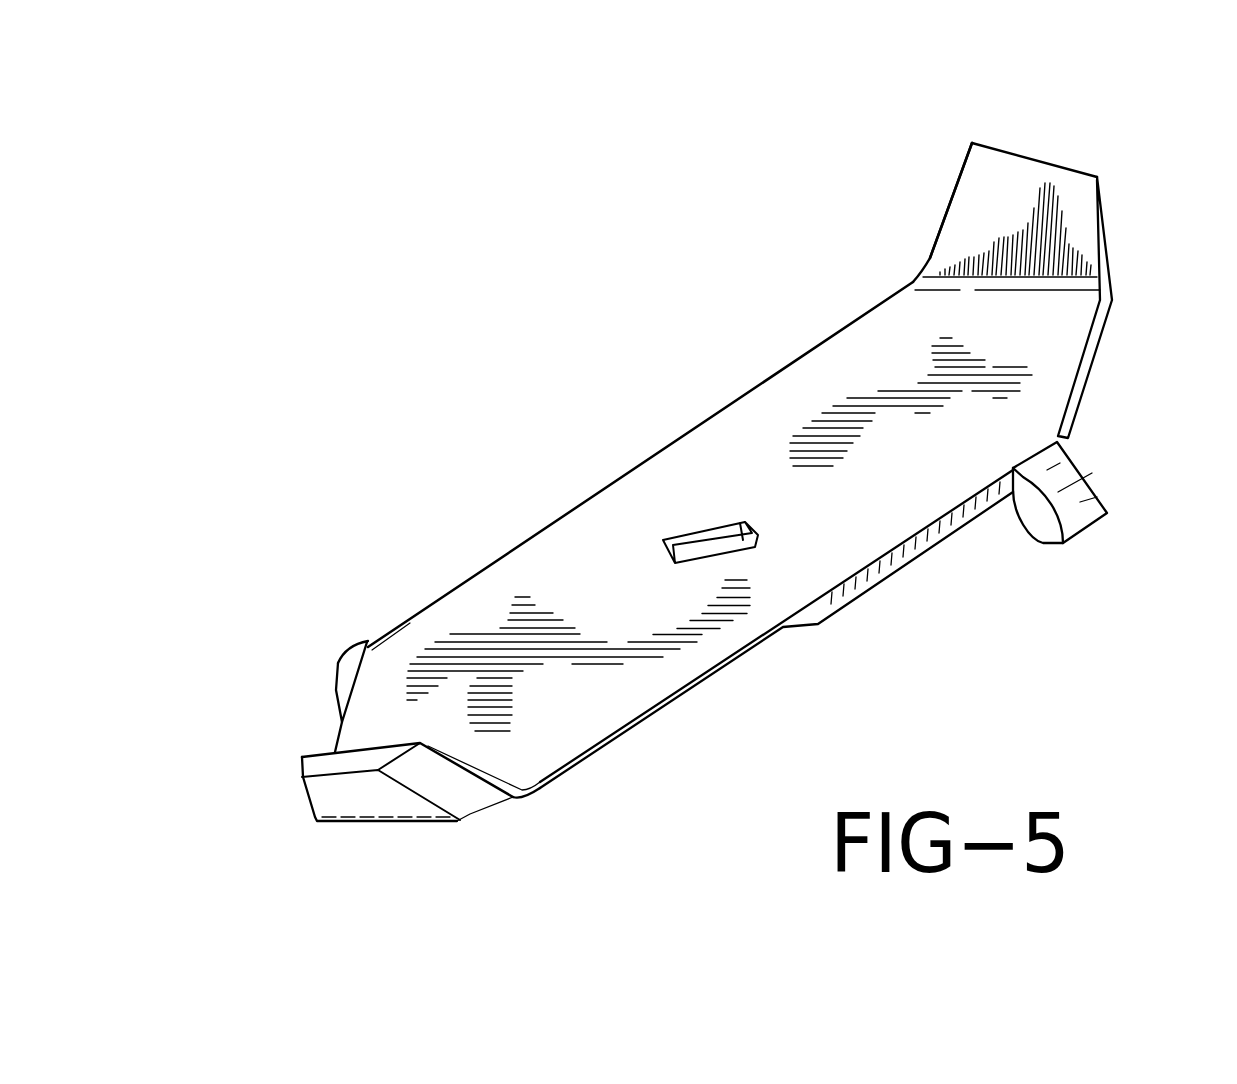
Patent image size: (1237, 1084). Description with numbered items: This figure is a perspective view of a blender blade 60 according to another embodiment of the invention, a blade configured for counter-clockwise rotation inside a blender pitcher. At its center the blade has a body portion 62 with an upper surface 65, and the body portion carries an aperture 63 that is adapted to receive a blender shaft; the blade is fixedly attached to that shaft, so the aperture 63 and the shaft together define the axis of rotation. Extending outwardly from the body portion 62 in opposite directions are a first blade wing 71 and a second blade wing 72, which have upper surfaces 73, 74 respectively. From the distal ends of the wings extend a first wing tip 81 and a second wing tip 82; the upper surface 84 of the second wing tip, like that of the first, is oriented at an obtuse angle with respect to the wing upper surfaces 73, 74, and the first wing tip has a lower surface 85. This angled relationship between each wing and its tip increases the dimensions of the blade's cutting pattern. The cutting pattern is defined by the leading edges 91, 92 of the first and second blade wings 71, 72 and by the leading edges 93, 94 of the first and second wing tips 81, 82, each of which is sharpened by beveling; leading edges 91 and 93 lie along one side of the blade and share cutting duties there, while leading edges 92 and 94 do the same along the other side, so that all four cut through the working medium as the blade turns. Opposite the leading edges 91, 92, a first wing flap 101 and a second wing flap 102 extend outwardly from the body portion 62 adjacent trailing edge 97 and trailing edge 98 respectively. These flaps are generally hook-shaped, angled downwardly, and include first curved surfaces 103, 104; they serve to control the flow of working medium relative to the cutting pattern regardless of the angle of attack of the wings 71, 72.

The blender blade 60 is at (507, 300).
The body portion 62 is at (814, 548).
The aperture 63 is at (722, 537).
The upper surface 65 is at (883, 530).
The first blade wing 71 is at (576, 728).
The second blade wing 72 is at (796, 382).
The upper surface 73 is at (678, 670).
The upper surface 74 is at (850, 360).
The first wing tip 81 is at (298, 820).
The second wing tip 82 is at (940, 191).
The upper surface 84 is at (1034, 177).
The lower surface 85 is at (392, 797).
The leading edge 91 is at (637, 720).
The leading edge 92 is at (730, 405).
The leading edge 93 is at (463, 778).
The leading edge 94 is at (960, 163).
The trailing edge 97 is at (333, 740).
The trailing edge 98 is at (1103, 333).
The first wing flap 101 is at (325, 652).
The second wing flap 102 is at (1095, 548).
The first curved surface 103 is at (367, 641).
The first curved surface 104 is at (1072, 462).